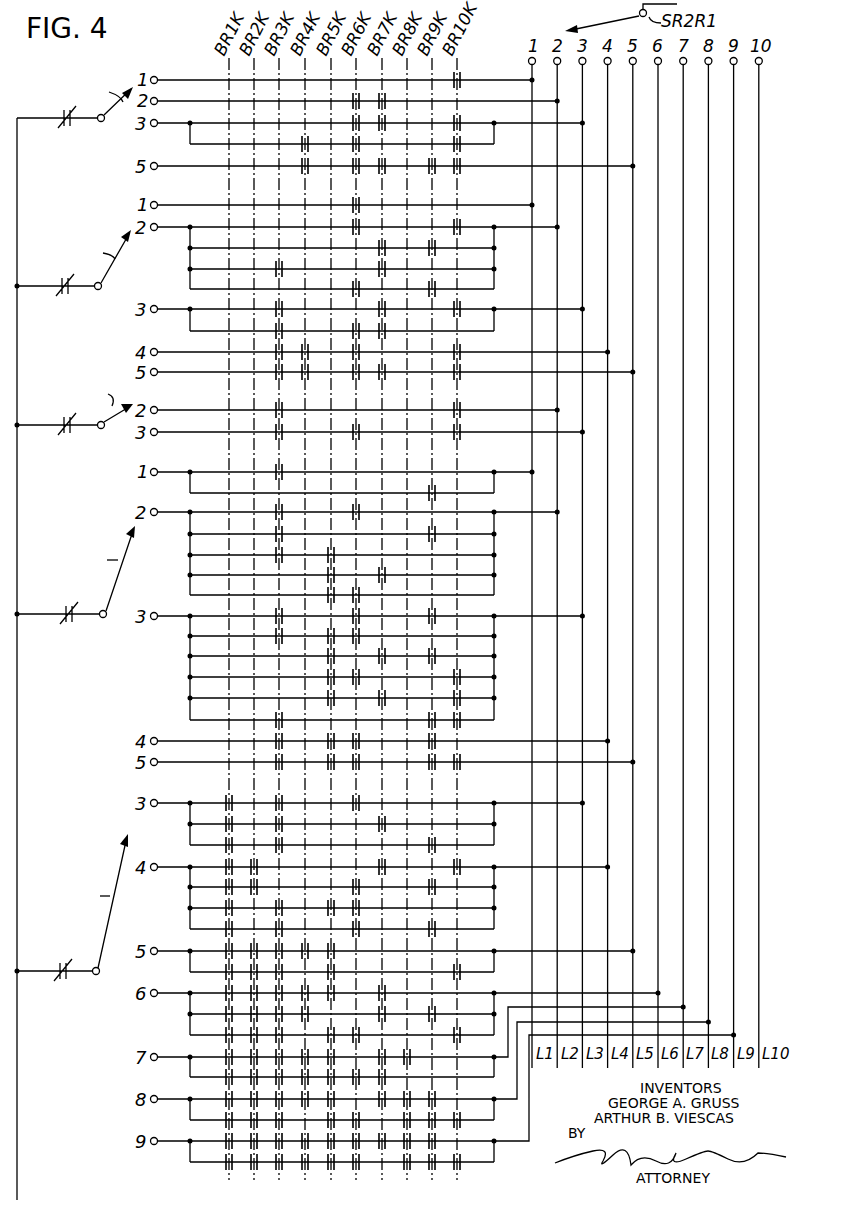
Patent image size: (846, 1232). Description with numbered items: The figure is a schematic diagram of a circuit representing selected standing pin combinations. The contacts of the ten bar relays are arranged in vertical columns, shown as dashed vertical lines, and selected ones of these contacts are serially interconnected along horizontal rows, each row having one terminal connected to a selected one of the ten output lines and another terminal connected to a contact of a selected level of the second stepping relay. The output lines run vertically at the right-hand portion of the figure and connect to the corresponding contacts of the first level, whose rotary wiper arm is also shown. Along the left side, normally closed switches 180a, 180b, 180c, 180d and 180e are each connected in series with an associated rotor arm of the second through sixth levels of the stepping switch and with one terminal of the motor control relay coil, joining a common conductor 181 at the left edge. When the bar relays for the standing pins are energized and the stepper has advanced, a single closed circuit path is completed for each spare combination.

The normally closed switch 180a is at (67, 127).
The normally closed switch 180b is at (63, 310).
The normally closed switch 180c is at (65, 450).
The normally closed switch 180d is at (69, 615).
The normally closed switch 180e is at (65, 980).
The common bus conductor 181 is at (18, 178).